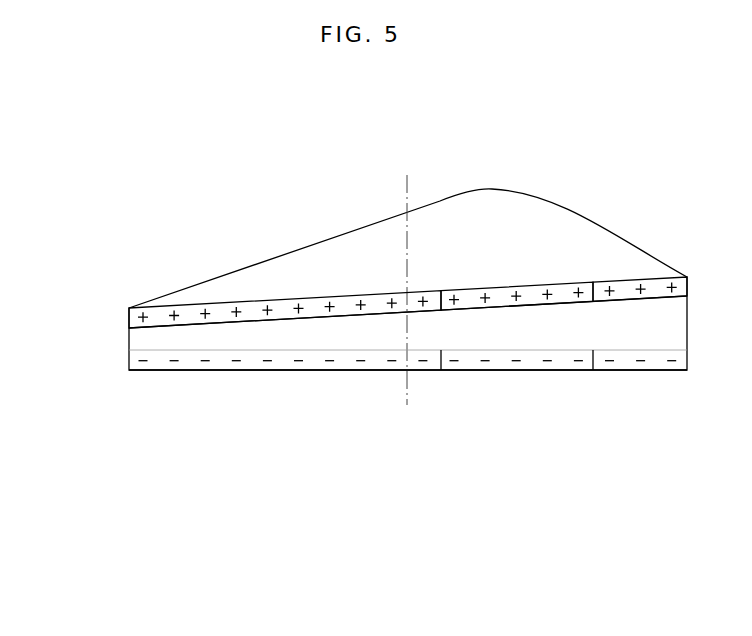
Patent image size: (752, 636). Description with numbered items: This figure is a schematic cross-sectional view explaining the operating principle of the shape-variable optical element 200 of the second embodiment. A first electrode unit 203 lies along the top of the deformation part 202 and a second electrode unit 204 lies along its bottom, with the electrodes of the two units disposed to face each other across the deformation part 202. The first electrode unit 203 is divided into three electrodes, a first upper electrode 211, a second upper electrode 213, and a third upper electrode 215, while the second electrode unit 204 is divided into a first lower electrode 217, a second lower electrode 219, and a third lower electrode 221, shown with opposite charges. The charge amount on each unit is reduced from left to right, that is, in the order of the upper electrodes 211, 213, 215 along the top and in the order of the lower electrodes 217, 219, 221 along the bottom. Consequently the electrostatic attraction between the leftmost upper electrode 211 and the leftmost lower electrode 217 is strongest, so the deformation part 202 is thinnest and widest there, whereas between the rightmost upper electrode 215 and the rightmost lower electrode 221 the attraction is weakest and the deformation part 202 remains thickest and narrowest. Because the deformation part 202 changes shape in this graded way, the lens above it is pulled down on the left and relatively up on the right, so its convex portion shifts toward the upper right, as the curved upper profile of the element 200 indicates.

The shape-variable optical element 200 is at (119, 204).
The deformation part 202 is at (135, 340).
The first electrode unit 203 is at (408, 201).
The second electrode unit 204 is at (408, 461).
The 1-1-th electrode 211 is at (232, 307).
The 1-2-th electrode 213 is at (497, 293).
The 1-3-th electrode 215 is at (617, 221).
The 2-1-th electrode 217 is at (263, 370).
The 2-2-th electrode 219 is at (464, 370).
The 2-3-th electrode 221 is at (640, 433).